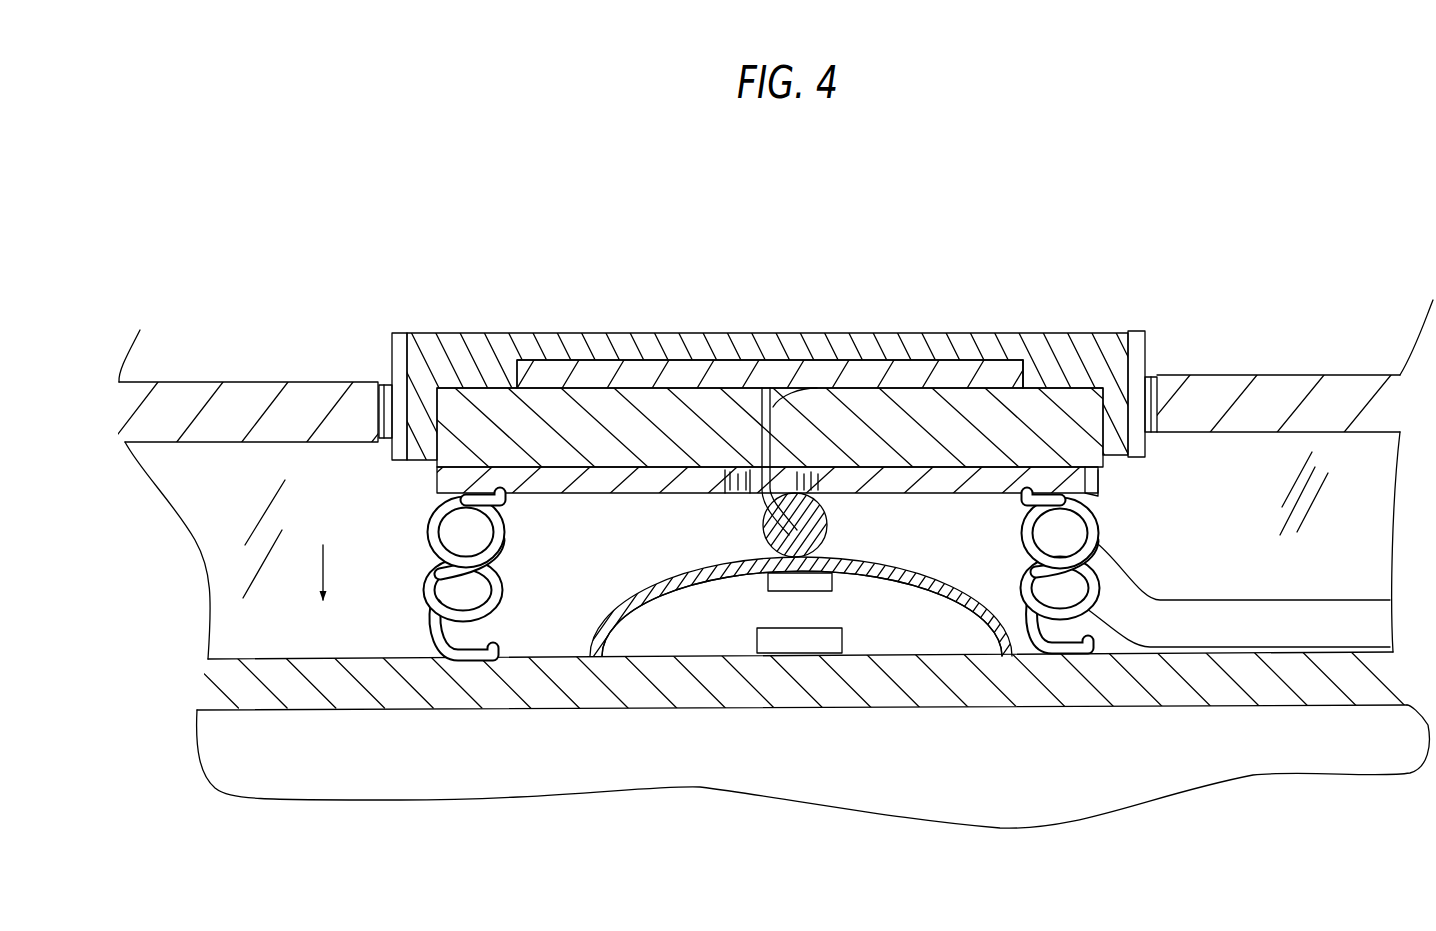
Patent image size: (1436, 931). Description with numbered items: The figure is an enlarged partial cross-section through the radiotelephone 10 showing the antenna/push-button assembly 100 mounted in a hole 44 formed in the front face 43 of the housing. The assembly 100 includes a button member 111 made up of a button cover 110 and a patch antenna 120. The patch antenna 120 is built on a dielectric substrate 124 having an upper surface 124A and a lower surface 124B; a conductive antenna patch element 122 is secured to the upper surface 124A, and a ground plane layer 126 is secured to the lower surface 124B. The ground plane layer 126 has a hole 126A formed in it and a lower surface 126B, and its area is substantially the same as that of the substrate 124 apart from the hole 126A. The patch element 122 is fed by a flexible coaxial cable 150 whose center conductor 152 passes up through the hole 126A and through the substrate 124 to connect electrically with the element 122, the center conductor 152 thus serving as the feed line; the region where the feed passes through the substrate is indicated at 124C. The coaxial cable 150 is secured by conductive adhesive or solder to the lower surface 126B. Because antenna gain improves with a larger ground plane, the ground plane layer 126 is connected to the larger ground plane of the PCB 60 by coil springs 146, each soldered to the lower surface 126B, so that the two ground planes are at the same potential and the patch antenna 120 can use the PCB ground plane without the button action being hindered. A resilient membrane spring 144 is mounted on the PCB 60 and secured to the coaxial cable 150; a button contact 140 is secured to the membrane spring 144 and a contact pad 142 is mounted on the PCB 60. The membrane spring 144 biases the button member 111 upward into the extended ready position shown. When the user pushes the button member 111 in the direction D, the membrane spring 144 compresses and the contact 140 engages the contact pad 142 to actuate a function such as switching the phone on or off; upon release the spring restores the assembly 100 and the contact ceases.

The radiotelephone 10 is at (276, 214).
The antenna/push-button assembly 100 is at (809, 397).
The front face 43 is at (300, 400).
The hole 44 is at (383, 420).
The PCB 60 is at (985, 693).
The button cover 110 is at (483, 342).
The button member 111 is at (1116, 312).
The patch antenna 120 is at (426, 485).
The conductive antenna patch element 122 is at (757, 372).
The dielectric substrate 124 is at (873, 405).
The upper surface 124A is at (980, 360).
The lower surface 124B is at (1100, 480).
The passage / hole in block 124C is at (775, 405).
The ground plane layer 126 is at (600, 497).
The hole 126A is at (752, 494).
The lower surface 126B is at (632, 500).
The button contact 140 is at (822, 578).
The contact pad 142 is at (830, 652).
The membrane spring 144 is at (648, 598).
The coil springs 146 is at (435, 626).
The flexible coaxial cable 150 is at (1250, 617).
The center conductor 152 is at (718, 360).